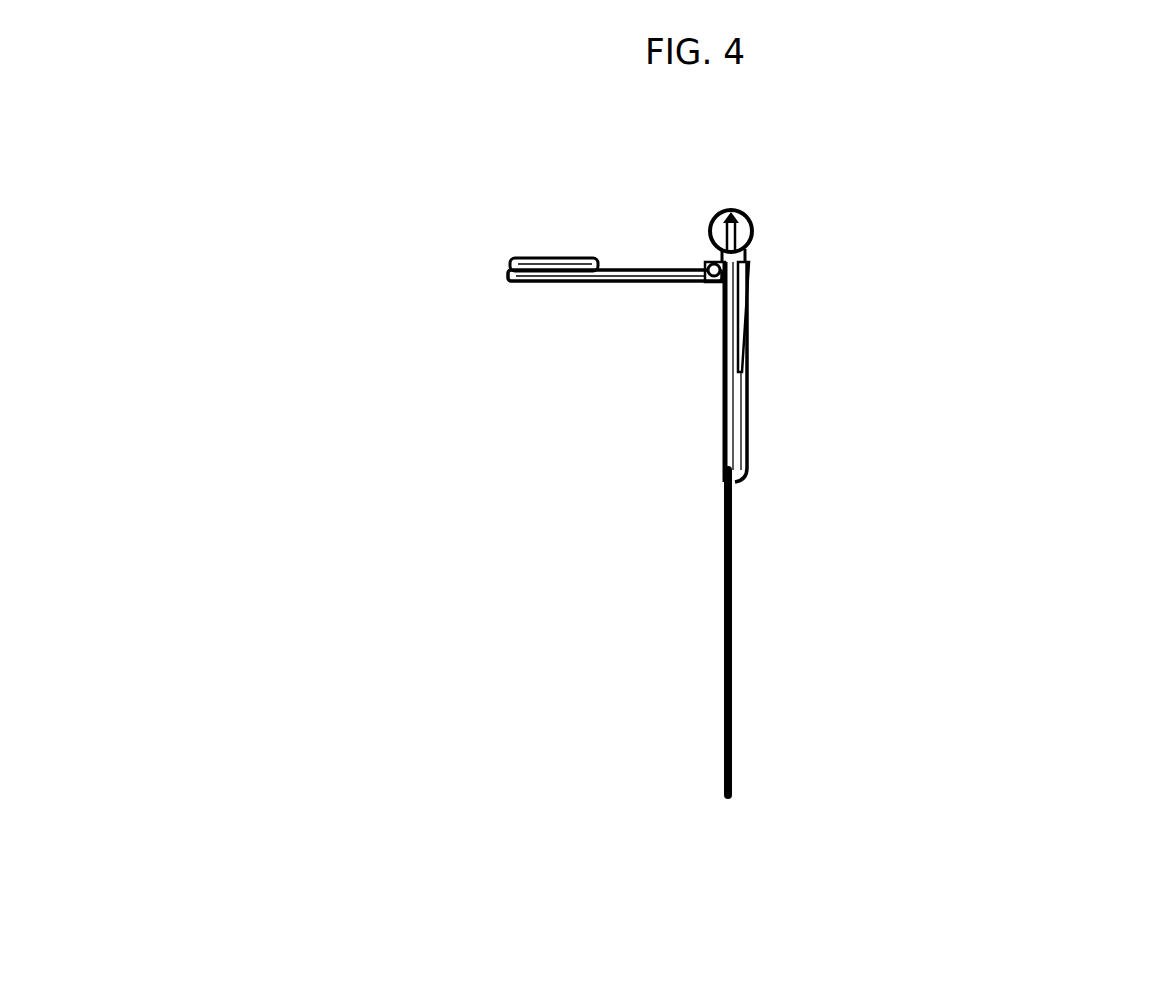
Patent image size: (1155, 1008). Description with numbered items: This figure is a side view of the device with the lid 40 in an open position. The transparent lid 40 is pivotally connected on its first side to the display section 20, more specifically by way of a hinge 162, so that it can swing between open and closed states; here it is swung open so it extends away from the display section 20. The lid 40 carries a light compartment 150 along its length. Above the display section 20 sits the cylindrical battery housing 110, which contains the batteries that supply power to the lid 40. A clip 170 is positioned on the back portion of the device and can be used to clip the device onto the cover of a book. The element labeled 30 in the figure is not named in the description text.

The battery housing 110 is at (752, 215).
The light compartment 150 is at (535, 258).
The hinge 162 is at (698, 283).
The lid 40 is at (635, 283).
The clip 170 is at (752, 290).
The display section 20 is at (750, 427).
The pole 30 is at (735, 737).